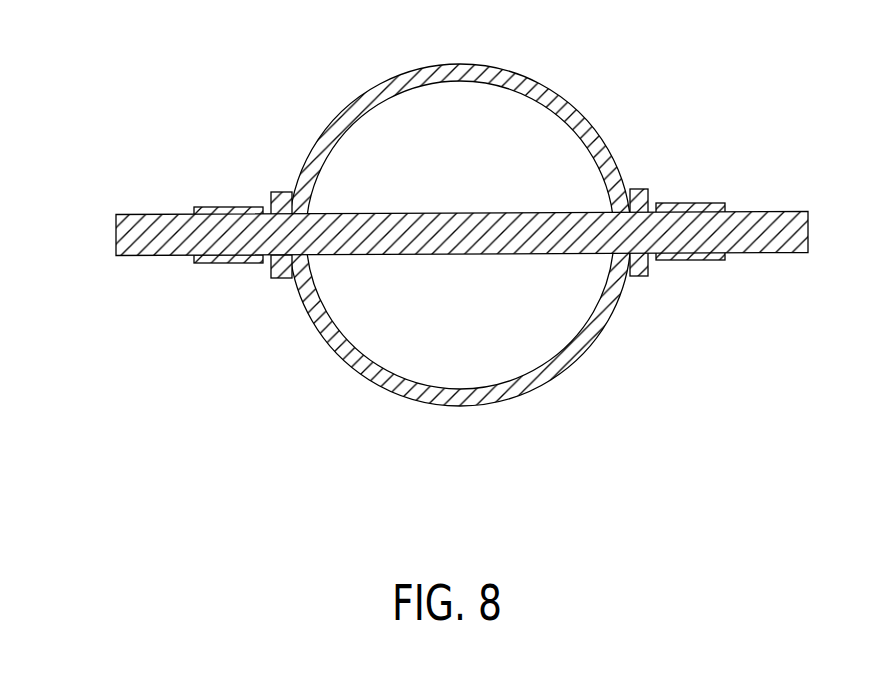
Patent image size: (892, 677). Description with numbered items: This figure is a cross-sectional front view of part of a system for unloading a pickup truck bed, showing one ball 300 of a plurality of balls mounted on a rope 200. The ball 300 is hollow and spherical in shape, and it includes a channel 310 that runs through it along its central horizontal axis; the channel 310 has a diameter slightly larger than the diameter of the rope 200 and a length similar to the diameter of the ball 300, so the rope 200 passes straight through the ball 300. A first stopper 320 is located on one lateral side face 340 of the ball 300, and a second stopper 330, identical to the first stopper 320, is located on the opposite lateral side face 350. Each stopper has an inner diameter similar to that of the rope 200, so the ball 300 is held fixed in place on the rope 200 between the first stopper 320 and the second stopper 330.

The rope 200 is at (129, 197).
The ball 300 is at (435, 167).
The channel 310 is at (329, 267).
The first stopper 320 is at (235, 155).
The second stopper 330 is at (701, 143).
The lateral side face 340 is at (277, 293).
The lateral side face 350 is at (643, 292).